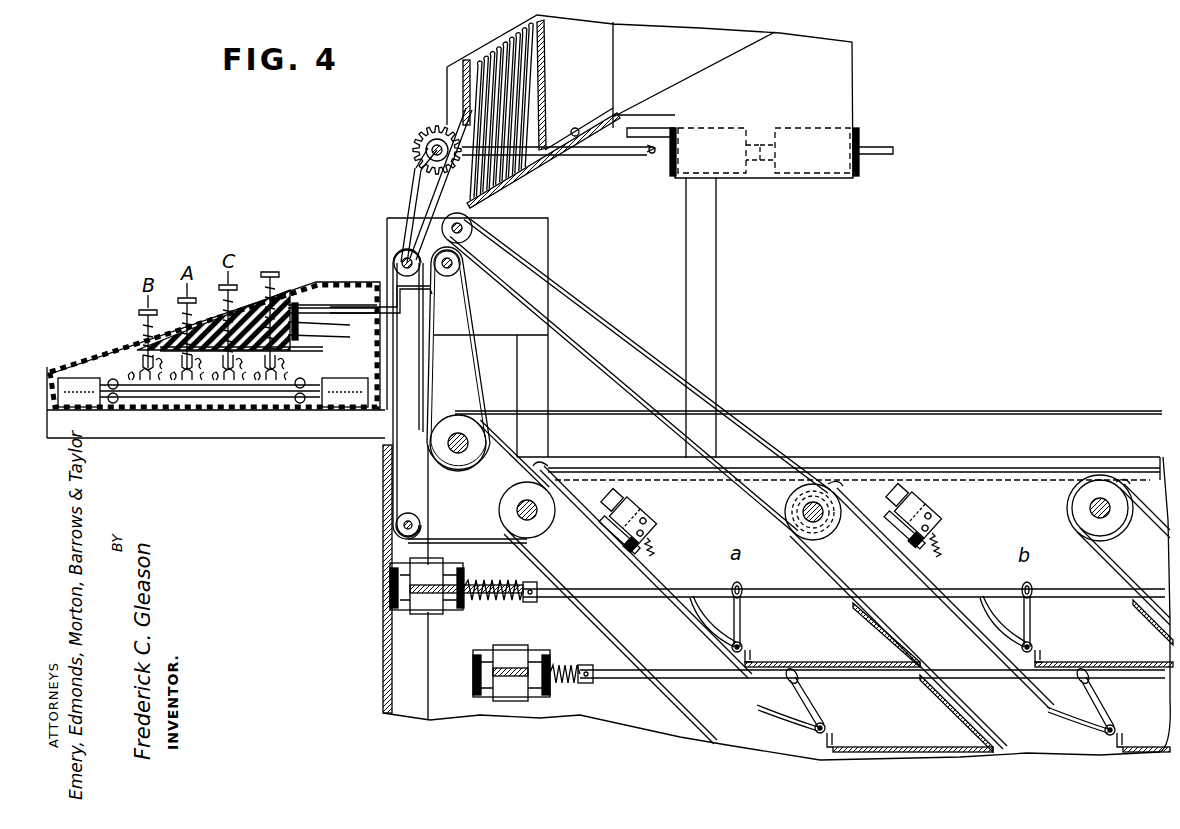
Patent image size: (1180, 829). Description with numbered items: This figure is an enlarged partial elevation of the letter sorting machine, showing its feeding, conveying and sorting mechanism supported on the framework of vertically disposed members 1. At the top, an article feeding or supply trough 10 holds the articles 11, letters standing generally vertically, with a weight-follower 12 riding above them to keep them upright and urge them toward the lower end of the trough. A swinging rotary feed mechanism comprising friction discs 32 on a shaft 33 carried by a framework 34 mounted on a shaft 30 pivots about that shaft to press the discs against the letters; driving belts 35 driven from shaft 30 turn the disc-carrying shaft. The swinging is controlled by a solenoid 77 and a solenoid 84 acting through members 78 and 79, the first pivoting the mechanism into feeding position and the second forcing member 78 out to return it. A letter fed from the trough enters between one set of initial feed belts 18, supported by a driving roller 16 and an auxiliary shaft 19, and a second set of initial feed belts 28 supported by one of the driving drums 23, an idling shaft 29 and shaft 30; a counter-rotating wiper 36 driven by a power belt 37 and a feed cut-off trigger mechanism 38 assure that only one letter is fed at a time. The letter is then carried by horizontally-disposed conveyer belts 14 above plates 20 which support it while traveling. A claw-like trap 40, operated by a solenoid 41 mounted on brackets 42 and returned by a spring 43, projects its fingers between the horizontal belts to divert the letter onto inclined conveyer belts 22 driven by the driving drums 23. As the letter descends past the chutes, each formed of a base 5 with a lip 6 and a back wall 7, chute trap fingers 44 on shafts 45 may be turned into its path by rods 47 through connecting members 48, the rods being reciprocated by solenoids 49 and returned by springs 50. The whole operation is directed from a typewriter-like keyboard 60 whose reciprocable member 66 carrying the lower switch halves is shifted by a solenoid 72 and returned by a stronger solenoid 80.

The vertically disposed member 1 is at (384, 548).
The base 5 is at (812, 662).
The lip 6 is at (752, 654).
The back wall 7 is at (858, 612).
The article feeding or supply trough 10 is at (538, 166).
The articles 11 is at (481, 60).
The weight-follower 12 is at (546, 60).
The horizontally-disposed conveyer belt 14 is at (937, 412).
The driving roller 16 is at (458, 420).
The initial feed belts 18 is at (472, 316).
The auxiliary shaft 19 is at (449, 280).
The plates 20 is at (680, 482).
The conveyer belts 22 is at (606, 603).
The driving drums 23 is at (545, 522).
The initial feed belts 28 is at (393, 466).
The idling shaft 29 is at (417, 516).
The shaft 30 is at (394, 262).
The friction discs 32 is at (414, 133).
The shaft 33 is at (418, 164).
The framework 34 is at (417, 212).
The driving belts 35 is at (409, 192).
The counter-rotating wiper 36 is at (466, 216).
The power belt 37 is at (603, 328).
The feed cut-off trigger mechanism 38 is at (413, 296).
The claw-like trap 40 is at (537, 464).
The solenoid 41 is at (658, 530).
The brackets 42 is at (655, 510).
The spring 43 is at (656, 552).
The fingers 44 is at (706, 604).
The shafts 45 is at (742, 644).
The rods 47 is at (797, 596).
The connecting members 48 is at (742, 610).
The solenoids 49 is at (455, 574).
The springs 50 is at (486, 582).
The keyboard 60 is at (129, 331).
The reciprocable member 66 is at (208, 400).
The solenoid 72 is at (70, 402).
The solenoid 77 is at (722, 126).
The member 78 is at (660, 152).
The member 79 is at (612, 158).
The solenoid 80 is at (342, 402).
The solenoid 84 is at (808, 127).